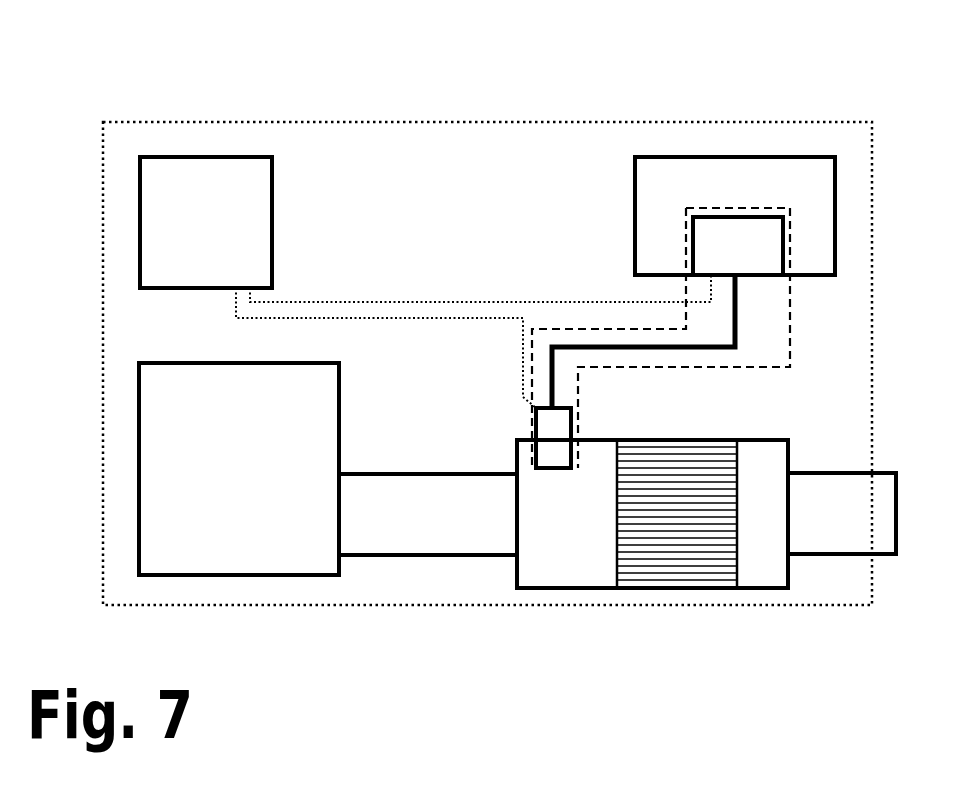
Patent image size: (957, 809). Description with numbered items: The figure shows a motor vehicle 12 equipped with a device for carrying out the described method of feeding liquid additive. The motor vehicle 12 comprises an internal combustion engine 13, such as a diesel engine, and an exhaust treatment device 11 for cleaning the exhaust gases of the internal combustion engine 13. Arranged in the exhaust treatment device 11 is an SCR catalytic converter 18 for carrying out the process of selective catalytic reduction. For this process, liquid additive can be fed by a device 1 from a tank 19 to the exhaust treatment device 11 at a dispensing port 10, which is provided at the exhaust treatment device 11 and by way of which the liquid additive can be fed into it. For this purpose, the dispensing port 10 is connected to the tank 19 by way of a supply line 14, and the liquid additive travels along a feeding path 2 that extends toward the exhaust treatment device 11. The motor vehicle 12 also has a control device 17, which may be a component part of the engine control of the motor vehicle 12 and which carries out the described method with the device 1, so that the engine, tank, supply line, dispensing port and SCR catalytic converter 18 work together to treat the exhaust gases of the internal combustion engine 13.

The motor vehicle 12 is at (103, 91).
The control device 17 is at (272, 223).
The tank 19 is at (635, 169).
The device 1 is at (560, 329).
The feeding path 2 is at (735, 348).
The supply line 14 is at (688, 348).
The dispensing port 10 is at (571, 408).
The internal combustion engine 13 is at (339, 422).
The exhaust treatment device 11 is at (557, 590).
The SCR catalytic converter 18 is at (738, 562).